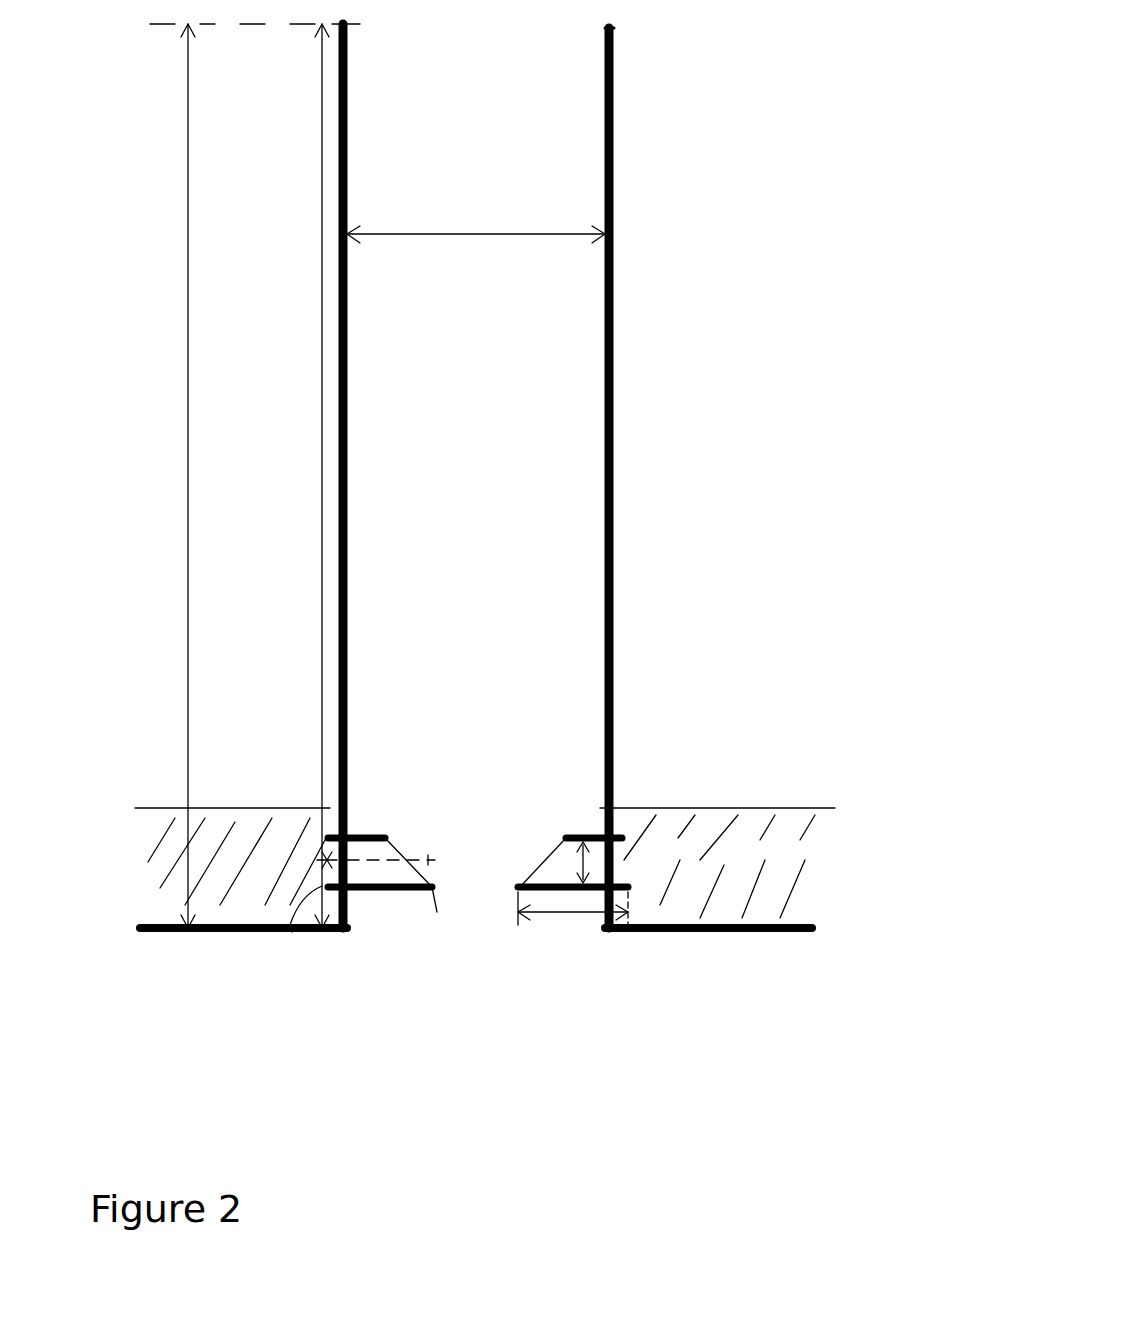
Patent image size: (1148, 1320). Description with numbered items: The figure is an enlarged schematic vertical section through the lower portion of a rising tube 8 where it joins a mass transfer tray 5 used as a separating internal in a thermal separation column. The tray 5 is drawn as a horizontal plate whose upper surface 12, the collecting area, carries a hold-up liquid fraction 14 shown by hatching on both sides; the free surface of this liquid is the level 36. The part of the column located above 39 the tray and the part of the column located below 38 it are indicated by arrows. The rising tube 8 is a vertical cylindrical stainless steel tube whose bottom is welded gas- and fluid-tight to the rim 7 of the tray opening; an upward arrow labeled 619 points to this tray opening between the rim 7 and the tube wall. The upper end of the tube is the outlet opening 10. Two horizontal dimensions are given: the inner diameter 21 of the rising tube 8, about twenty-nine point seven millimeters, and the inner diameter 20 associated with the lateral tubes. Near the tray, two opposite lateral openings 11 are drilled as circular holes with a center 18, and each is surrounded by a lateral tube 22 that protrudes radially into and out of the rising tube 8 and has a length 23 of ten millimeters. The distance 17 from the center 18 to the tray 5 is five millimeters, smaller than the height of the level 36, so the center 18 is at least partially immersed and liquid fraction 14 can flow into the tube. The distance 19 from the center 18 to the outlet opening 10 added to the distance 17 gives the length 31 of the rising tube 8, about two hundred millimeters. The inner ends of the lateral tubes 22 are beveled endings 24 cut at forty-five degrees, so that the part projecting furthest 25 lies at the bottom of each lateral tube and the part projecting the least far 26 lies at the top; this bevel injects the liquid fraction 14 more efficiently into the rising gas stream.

The mass transfer tray 5 is at (177, 932).
The rim 7 is at (340, 932).
The rising tube 8 is at (613, 523).
The outlet opening 10 is at (612, 28).
The lateral opening 11 is at (622, 866).
The upper surface 12 is at (215, 925).
The liquid fraction 14 is at (805, 870).
The distance 17 is at (292, 932).
The center 18 is at (435, 858).
The distance 19 is at (323, 549).
The inner diameter 20 is at (622, 865).
The inner diameter 21 is at (452, 233).
The lateral tube 22 is at (385, 892).
The length 23 is at (568, 910).
The beveled ending 24 is at (545, 860).
The part projecting furthest 25 is at (423, 892).
The part projecting the least far 26 is at (379, 834).
The length 31 is at (188, 495).
The level 36 is at (243, 808).
The part of the column located below 38 is at (800, 1058).
The part of the column located above 39 is at (805, 732).
The gap 619 is at (468, 954).